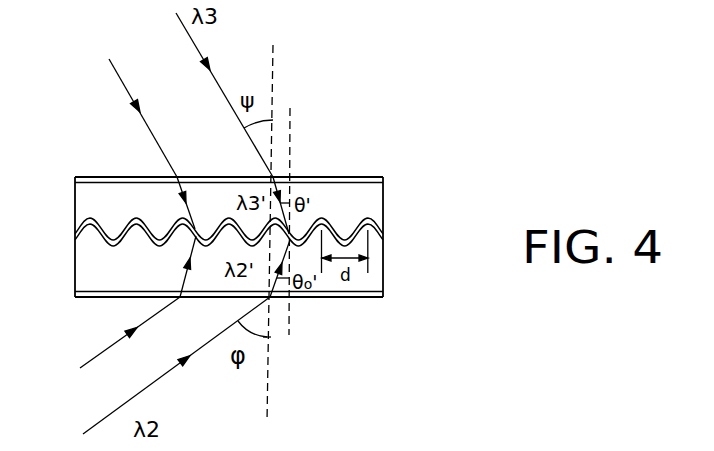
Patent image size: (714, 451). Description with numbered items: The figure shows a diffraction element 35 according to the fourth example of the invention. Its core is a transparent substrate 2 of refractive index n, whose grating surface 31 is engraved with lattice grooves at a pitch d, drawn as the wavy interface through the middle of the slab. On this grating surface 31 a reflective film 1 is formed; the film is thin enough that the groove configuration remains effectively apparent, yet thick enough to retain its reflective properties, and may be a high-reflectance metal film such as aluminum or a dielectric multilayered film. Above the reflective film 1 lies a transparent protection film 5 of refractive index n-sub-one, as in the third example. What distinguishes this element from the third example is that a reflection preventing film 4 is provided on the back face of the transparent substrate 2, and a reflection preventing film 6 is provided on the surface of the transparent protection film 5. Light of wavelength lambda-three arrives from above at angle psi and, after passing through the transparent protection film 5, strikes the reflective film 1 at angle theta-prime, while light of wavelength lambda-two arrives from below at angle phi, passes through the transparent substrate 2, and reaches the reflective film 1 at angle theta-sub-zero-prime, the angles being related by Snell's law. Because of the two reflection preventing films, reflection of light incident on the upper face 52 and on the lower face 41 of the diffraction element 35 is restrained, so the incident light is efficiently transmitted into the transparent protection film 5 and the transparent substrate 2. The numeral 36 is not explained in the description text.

The reflective film 1 is at (383, 221).
The transparent substrate 2 is at (377, 271).
The reflection preventing film 4 is at (377, 296).
The lower face 41 is at (345, 298).
The transparent protection film 5 is at (92, 207).
The reflection preventing film 6 is at (86, 179).
The upper face 52 is at (117, 175).
The grating surface 31 is at (103, 243).
The diffraction element 35 is at (470, 197).
The output light direction 36 is at (502, 450).